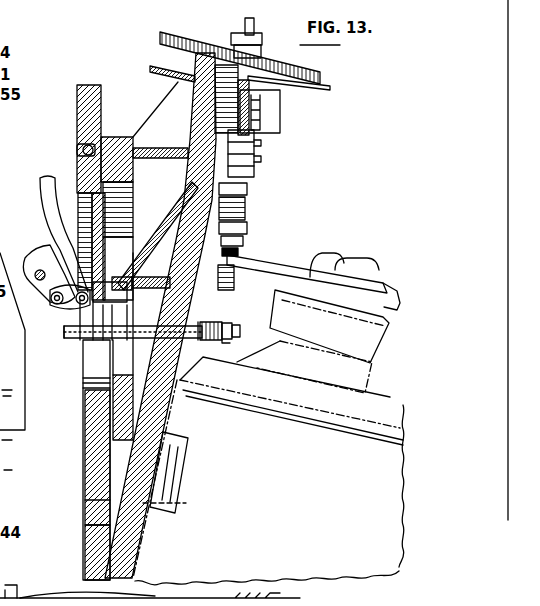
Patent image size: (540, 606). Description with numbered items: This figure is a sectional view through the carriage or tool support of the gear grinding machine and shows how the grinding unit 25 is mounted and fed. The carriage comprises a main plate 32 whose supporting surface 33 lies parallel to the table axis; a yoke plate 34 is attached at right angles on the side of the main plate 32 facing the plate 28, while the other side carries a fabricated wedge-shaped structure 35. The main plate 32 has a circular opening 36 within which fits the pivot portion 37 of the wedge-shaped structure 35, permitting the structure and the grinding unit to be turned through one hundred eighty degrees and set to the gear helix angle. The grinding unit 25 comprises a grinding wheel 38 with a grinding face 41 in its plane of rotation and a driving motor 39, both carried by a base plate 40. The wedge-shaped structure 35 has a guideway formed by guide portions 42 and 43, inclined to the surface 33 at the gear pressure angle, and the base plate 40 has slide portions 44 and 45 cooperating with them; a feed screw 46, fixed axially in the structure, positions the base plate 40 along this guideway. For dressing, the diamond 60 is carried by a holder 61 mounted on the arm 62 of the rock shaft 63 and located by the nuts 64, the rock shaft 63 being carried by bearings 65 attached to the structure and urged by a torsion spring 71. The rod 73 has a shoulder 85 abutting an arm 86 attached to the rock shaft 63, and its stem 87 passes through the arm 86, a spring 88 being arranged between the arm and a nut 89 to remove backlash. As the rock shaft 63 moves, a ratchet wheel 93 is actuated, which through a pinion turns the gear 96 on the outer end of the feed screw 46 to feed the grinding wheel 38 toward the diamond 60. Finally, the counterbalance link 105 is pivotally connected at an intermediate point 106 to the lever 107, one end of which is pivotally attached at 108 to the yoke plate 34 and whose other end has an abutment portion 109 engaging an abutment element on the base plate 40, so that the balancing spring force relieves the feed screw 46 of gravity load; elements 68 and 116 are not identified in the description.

The gear 96 is at (214, 34).
The housing 68 is at (327, 60).
The ratchet wheel 93 is at (284, 89).
The bearings 65 is at (291, 109).
The feed screw 46 is at (250, 110).
The torsion spring 71 is at (251, 159).
The guide portion 43 is at (259, 154).
The nuts 64 is at (247, 190).
The arm 62 is at (245, 208).
The holder 61 is at (244, 241).
The diamond 60 is at (238, 253).
The grinding face 41 is at (279, 264).
The grinding wheel 38 is at (396, 289).
The driving motor 39 is at (395, 401).
The grinding unit 25 is at (302, 462).
The main plate 32 is at (82, 108).
The supporting surface 33 is at (103, 125).
The circular opening 36 is at (78, 146).
The slide portion 45 is at (182, 145).
The wedge-shaped structure 35 is at (167, 184).
The base plate 40 is at (155, 408).
The guide portion 42 is at (176, 445).
The slide portion 44 is at (176, 495).
The pivot portion 37 is at (92, 512).
The link 105 is at (45, 203).
The yoke plate 34 is at (32, 265).
The pivotal attachment 108 is at (57, 302).
The intermediate point 106 is at (79, 308).
The lever 107 is at (101, 288).
The strut 116 is at (130, 280).
The abutment portion 109 is at (114, 300).
The rod 73 is at (74, 338).
The rock shaft 63 is at (235, 280).
The arm 86 is at (215, 322).
The spring 88 is at (228, 323).
The nut 89 is at (240, 328).
The shoulder 85 is at (198, 340).
The stem 87 is at (215, 342).
The plate 28 is at (63, 600).